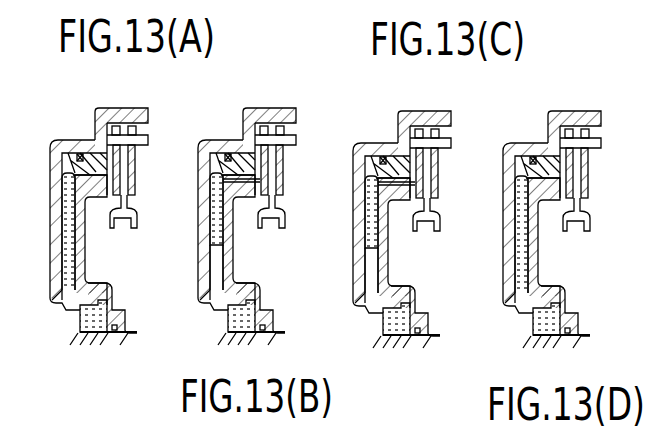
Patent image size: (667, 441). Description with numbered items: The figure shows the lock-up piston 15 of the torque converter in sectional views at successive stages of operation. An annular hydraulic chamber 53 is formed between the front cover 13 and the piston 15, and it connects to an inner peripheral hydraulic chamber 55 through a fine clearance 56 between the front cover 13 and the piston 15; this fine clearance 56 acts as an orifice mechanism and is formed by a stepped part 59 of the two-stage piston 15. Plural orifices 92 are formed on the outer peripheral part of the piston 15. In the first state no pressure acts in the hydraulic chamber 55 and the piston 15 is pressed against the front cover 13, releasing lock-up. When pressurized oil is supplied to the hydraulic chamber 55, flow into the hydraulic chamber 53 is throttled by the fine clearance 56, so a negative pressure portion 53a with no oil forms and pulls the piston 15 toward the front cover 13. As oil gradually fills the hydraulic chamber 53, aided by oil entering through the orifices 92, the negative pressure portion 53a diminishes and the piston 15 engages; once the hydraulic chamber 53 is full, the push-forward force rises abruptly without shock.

In FIG. 13A, the front cover 13 is at (53, 158).
In FIG. 13B, the front cover 13 is at (217, 206).
In FIG. 13C, the front cover 13 is at (373, 208).
In FIG. 13D, the front cover 13 is at (523, 208).
In FIG. 13A, the piston 15 is at (80, 243).
In FIG. 13B, the piston 15 is at (250, 234).
In FIG. 13C, the piston 15 is at (403, 237).
In FIG. 13D, the piston 15 is at (553, 237).
In FIG. 13A, the annular hydraulic chamber 53 is at (63, 212).
In FIG. 13B, the annular hydraulic chamber 53 is at (194, 209).
In FIG. 13C, the annular hydraulic chamber 53 is at (348, 212).
In FIG. 13D, the annular hydraulic chamber 53 is at (498, 234).
In FIG. 13B, the negative pressure portion 53a is at (190, 253).
In FIG. 13C, the negative pressure portion 53a is at (345, 254).
In FIG. 13A, the hydraulic chamber 55 is at (88, 318).
In FIG. 13B, the hydraulic chamber 55 is at (218, 329).
In FIG. 13C, the hydraulic chamber 55 is at (375, 328).
In FIG. 13D, the hydraulic chamber 55 is at (520, 327).
In FIG. 13A, the fine clearance 56 is at (53, 299).
In FIG. 13B, the fine clearance 56 is at (197, 308).
In FIG. 13C, the fine clearance 56 is at (353, 315).
In FIG. 13D, the fine clearance 56 is at (502, 306).
In FIG. 13A, the stepped part 59 is at (102, 298).
In FIG. 13B, the stepped part 59 is at (275, 298).
In FIG. 13C, the stepped part 59 is at (420, 297).
In FIG. 13D, the stepped part 59 is at (571, 301).
In FIG. 13A, the orifices 92 is at (82, 163).
In FIG. 13B, the orifices 92 is at (235, 134).
In FIG. 13C, the orifices 92 is at (387, 134).
In FIG. 13D, the orifices 92 is at (538, 134).